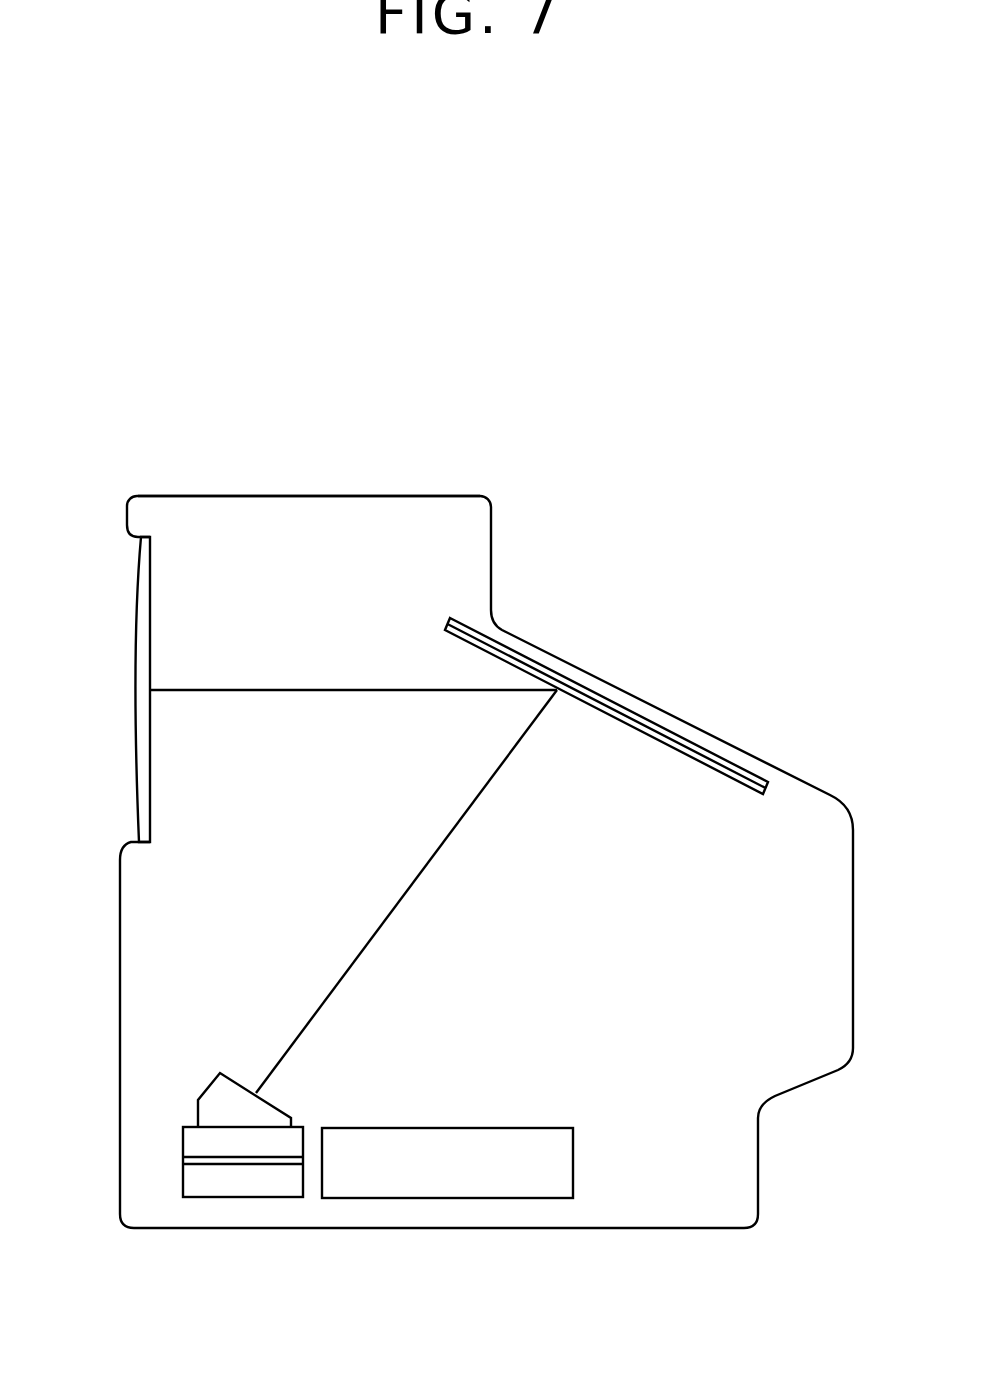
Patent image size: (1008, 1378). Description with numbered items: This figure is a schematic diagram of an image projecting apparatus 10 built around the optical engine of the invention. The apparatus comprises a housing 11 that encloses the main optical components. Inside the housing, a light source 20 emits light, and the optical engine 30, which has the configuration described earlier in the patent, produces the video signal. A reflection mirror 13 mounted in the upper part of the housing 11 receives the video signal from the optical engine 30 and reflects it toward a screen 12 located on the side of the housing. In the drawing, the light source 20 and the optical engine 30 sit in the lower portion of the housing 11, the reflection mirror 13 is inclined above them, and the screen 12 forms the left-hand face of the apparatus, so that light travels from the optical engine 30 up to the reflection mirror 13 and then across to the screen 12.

The image projecting apparatus 10 is at (777, 480).
The housing 11 is at (307, 495).
The screen 12 is at (133, 650).
The reflection mirror 13 is at (703, 752).
The light source 20 is at (438, 1188).
The optical engine 30 is at (253, 1165).